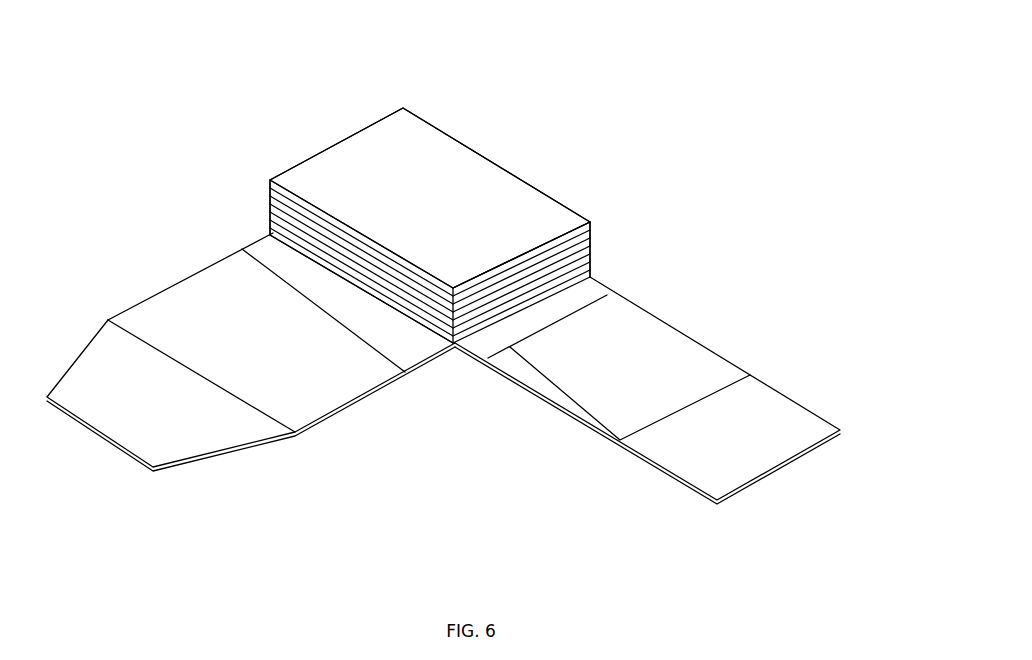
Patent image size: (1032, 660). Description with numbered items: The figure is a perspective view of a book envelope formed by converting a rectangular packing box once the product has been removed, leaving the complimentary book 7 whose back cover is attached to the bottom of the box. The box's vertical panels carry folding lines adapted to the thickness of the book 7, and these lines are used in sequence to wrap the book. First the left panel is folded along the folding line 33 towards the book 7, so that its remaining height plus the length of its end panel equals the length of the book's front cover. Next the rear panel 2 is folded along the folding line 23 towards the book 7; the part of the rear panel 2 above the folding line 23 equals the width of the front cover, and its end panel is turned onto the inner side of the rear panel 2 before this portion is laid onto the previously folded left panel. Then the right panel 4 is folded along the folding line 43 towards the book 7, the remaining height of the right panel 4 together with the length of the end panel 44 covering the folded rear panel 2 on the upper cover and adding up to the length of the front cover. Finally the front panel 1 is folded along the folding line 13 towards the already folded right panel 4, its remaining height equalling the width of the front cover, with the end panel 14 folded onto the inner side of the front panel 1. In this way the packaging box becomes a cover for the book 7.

The front panel 1 is at (253, 315).
The rear panel 2 is at (363, 162).
The right panel 4 is at (605, 325).
The book 7 is at (270, 212).
The folding line 13 is at (345, 305).
The end panel 14 is at (183, 415).
The folding line 23 is at (530, 187).
The folding line 33 is at (395, 114).
The folding line 43 is at (597, 432).
The end panel 44 is at (727, 405).